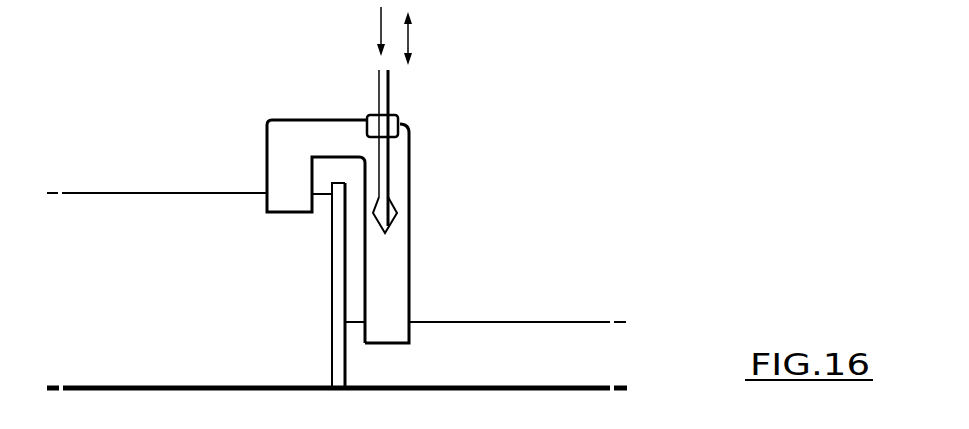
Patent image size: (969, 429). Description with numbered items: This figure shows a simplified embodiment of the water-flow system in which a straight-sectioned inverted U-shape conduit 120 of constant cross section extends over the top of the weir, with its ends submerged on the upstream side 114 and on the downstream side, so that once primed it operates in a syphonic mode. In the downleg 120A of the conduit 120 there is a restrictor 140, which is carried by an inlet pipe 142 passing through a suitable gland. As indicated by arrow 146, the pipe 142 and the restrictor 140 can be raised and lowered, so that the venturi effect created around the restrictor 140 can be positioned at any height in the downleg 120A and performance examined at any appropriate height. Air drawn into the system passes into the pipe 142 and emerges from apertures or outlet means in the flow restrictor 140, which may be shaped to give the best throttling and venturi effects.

The conduit 120 is at (273, 119).
The downleg 120A is at (412, 187).
The upstream side 114 is at (367, 115).
The inlet pipe 142 is at (389, 96).
The restrictor 140 is at (390, 230).
The arrow 146 is at (412, 43).